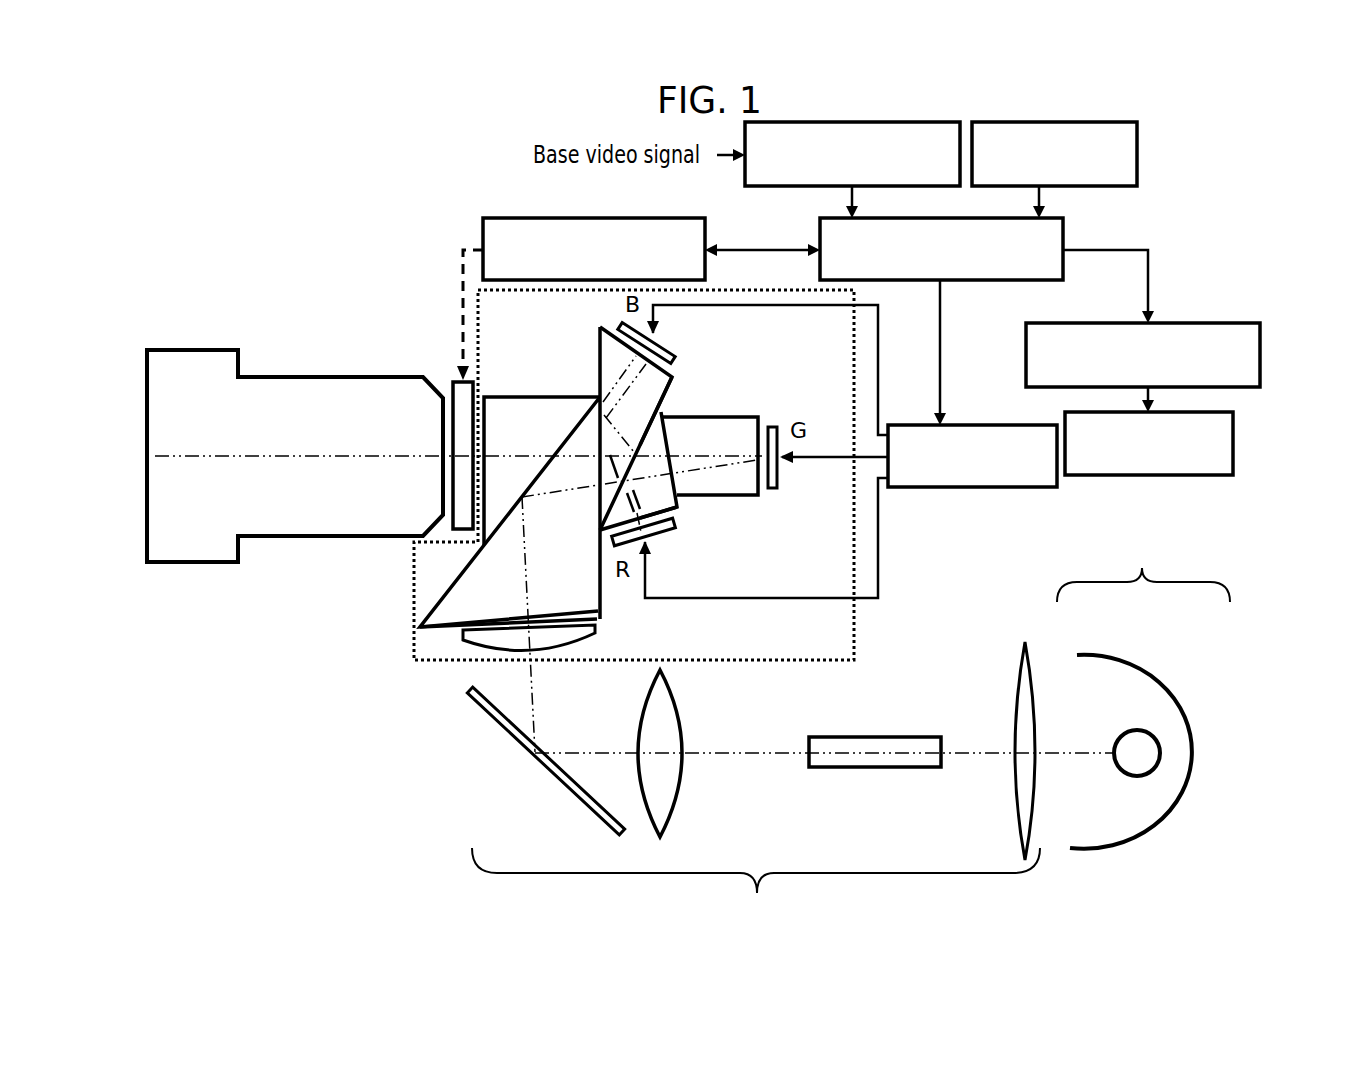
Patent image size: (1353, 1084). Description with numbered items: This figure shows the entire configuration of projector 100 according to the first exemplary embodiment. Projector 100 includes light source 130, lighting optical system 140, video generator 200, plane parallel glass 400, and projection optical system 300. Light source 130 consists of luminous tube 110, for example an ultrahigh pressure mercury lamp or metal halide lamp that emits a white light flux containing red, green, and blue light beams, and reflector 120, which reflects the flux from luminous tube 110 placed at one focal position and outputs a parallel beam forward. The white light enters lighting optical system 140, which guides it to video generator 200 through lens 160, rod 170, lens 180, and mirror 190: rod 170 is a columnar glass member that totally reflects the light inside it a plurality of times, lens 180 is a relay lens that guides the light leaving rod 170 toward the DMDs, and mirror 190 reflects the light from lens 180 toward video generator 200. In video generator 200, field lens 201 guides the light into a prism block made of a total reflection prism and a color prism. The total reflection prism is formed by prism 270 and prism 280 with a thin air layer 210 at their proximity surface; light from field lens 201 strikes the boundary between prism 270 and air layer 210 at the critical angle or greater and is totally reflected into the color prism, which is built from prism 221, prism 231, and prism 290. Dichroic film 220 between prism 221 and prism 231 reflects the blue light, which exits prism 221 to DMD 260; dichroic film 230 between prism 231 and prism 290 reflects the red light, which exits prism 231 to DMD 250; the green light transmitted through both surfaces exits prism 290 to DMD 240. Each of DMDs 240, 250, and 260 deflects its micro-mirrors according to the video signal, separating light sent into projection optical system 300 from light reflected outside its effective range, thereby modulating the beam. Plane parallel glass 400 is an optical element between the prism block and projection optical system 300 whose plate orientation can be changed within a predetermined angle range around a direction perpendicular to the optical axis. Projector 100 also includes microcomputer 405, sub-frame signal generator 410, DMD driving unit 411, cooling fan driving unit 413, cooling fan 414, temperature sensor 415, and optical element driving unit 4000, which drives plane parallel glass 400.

The projector 100 is at (333, 213).
The luminous tube 110 is at (1142, 743).
The reflector 120 is at (1108, 658).
The light source 130 is at (1143, 569).
The lighting optical system 140 is at (756, 887).
The lens 160 is at (1013, 770).
The rod 170 is at (858, 767).
The lens 180 is at (680, 790).
The mirror 190 is at (545, 770).
The video generator 200 is at (412, 574).
The field lens 201 is at (593, 627).
The air layer 210 is at (575, 425).
The dichroic film 220 is at (662, 418).
The prism 221 is at (670, 373).
The dichroic film 230 is at (667, 427).
The prism 231 is at (658, 495).
The DMD 240 is at (778, 470).
The DMD 250 is at (673, 530).
The DMD 260 is at (615, 327).
The prism 270 is at (582, 592).
The prism 280 is at (515, 418).
The prism 290 is at (748, 478).
The projection optical system 300 is at (375, 387).
The plane parallel glass 400 is at (462, 392).
The microcomputer 405 is at (941, 249).
The sub-frame signal generator 410 is at (852, 154).
The DMD driving unit 411 is at (972, 456).
The cooling fan driving unit 413 is at (1143, 355).
The cooling fan 414 is at (1149, 443).
The temperature sensor 415 is at (1054, 154).
The optical element driving unit 4000 is at (594, 249).